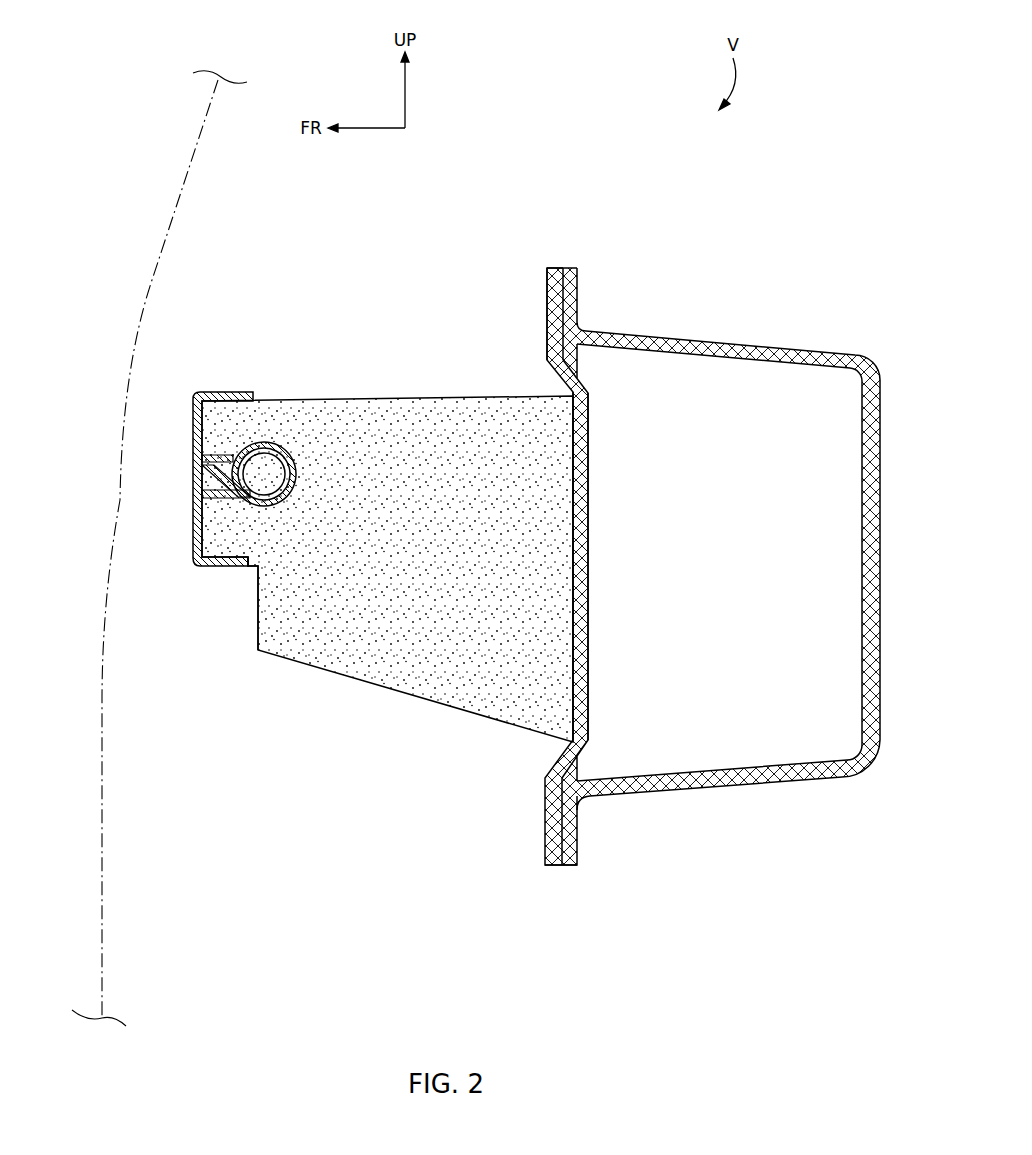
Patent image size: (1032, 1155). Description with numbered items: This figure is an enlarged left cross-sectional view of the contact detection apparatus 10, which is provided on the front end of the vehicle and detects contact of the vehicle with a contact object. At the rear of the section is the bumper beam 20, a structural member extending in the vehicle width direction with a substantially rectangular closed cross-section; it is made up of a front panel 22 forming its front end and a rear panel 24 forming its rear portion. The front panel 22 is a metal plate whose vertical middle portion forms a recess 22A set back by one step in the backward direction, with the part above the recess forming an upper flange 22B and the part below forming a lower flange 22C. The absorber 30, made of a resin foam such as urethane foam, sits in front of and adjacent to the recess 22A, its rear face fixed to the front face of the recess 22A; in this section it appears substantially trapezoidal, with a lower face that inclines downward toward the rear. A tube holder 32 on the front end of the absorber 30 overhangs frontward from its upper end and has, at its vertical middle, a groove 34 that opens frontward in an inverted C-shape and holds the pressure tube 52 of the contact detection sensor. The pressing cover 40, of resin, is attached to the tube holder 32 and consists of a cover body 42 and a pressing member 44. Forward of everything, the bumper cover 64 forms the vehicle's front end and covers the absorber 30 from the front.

The contact detection apparatus 10 is at (644, 142).
The bumper beam 20 is at (773, 349).
The front panel 22 is at (556, 264).
The recess 22A is at (580, 546).
The upper flange 22B is at (547, 318).
The lower flange 22C is at (546, 828).
The rear panel 24 is at (572, 264).
The absorber 30 is at (410, 393).
The tube holder 32 is at (252, 568).
The groove 34 is at (261, 444).
The pressing cover 40 is at (235, 390).
The cover body 42 is at (196, 447).
The pressing member 44 is at (198, 481).
The pressure tube 52 is at (285, 450).
The bumper cover 64 is at (140, 312).